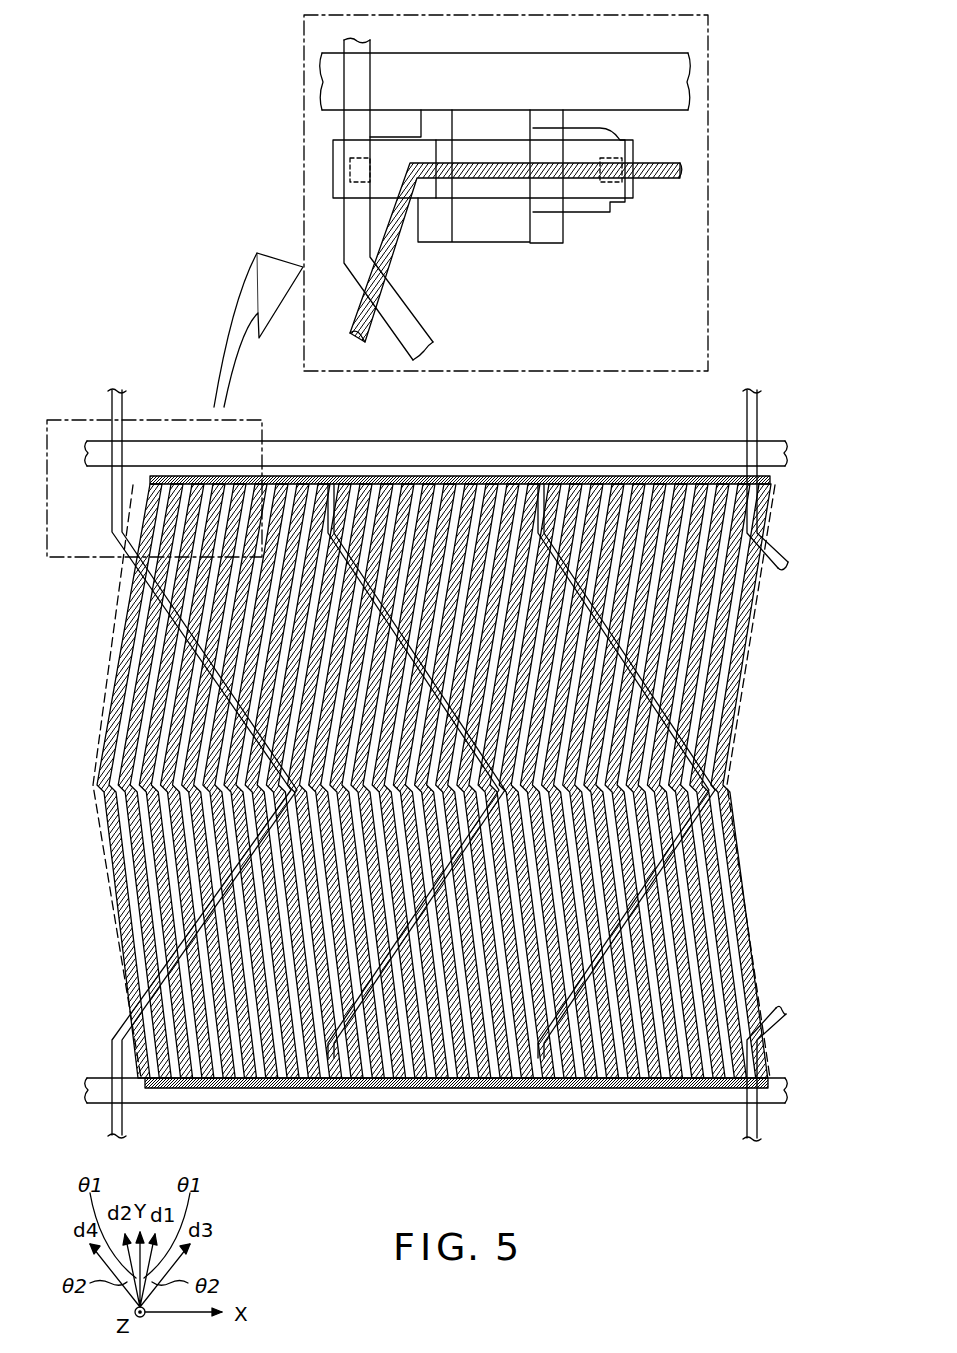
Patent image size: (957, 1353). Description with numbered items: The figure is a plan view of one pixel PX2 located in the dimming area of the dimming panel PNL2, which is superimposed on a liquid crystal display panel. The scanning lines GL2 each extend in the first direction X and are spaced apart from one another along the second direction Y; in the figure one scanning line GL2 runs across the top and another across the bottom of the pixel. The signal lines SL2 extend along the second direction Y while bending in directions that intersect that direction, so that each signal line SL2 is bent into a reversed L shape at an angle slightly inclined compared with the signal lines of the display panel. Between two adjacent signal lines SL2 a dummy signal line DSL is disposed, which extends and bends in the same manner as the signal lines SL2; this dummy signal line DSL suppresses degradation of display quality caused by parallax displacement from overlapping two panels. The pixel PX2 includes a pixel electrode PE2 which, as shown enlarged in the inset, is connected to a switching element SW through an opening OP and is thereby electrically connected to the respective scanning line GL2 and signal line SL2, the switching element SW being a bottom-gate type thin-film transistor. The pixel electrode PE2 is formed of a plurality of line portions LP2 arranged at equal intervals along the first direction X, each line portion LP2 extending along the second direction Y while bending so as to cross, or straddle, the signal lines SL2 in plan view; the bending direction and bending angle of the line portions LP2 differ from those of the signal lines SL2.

The dimming panel PNL2 is at (787, 350).
The scanning line GL2 is at (668, 98).
The signal line SL2 is at (357, 73).
The switching element SW is at (495, 192).
The opening OP is at (358, 195).
The pixel electrode PE2 is at (387, 252).
The dummy signal line DSL is at (338, 480).
The pixel PX2 is at (748, 684).
The line portion LP2 is at (155, 694).